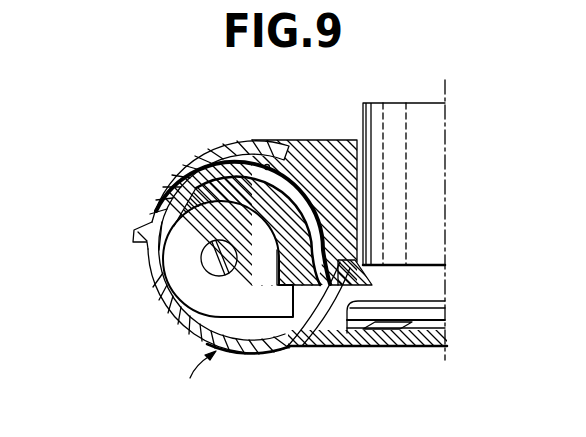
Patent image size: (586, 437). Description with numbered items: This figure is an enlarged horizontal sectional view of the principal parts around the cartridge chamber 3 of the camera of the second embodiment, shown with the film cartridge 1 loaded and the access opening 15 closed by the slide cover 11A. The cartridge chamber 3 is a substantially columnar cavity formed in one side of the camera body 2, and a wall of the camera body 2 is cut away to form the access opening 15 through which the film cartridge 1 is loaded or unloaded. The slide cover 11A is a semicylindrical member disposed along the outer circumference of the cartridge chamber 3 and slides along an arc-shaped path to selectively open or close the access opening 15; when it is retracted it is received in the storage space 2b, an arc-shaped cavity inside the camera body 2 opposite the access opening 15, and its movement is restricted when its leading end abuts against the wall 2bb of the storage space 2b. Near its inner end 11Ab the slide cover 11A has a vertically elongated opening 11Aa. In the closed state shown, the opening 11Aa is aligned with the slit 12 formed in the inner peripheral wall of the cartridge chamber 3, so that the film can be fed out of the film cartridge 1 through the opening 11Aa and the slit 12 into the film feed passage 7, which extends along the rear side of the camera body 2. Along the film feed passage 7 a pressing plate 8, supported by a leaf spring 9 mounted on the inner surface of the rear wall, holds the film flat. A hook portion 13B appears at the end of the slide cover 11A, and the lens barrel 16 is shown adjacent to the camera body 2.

The film cartridge 1 is at (162, 264).
The camera body 2 is at (316, 160).
The storage space 2b is at (267, 164).
The wall of the storage space 2bb is at (160, 200).
The cartridge chamber 3 is at (216, 190).
The film feed passage 7 is at (380, 348).
The pressing plate 8 is at (440, 312).
The leaf spring 9 is at (437, 352).
The slide cover 11A is at (168, 318).
The opening 11Aa is at (302, 346).
The inner end 11Ab is at (360, 268).
The slit 12 is at (350, 346).
The hook portion 13B is at (132, 229).
The access opening 15 is at (184, 374).
The lens barrel 16 is at (430, 130).